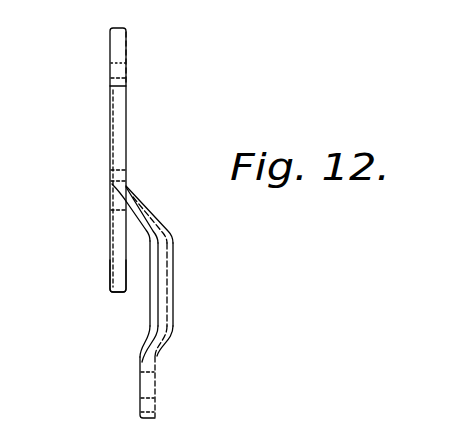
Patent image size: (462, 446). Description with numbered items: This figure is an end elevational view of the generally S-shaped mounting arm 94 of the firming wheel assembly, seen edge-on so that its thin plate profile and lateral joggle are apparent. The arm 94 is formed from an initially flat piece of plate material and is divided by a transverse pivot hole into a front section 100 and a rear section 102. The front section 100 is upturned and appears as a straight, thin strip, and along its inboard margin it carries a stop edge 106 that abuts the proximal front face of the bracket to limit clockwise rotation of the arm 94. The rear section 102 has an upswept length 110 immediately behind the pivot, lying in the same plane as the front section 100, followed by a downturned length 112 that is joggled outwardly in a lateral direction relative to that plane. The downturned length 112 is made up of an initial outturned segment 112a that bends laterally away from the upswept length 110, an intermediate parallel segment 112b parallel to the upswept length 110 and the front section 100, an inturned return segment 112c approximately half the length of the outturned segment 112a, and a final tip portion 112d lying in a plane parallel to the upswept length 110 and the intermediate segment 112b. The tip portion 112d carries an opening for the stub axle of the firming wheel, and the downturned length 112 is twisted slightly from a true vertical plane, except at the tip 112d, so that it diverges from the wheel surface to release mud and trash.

The mounting arm 94 is at (180, 104).
The front section 100 is at (108, 123).
The rear section 102 is at (131, 319).
The stop edge 106 is at (128, 52).
The upswept length 110 is at (108, 262).
The downturned length 112 is at (185, 262).
The outturned segment 112a is at (157, 213).
The intermediate parallel segment 112b is at (168, 298).
The return segment 112c is at (161, 347).
The tip portion 112d is at (157, 408).